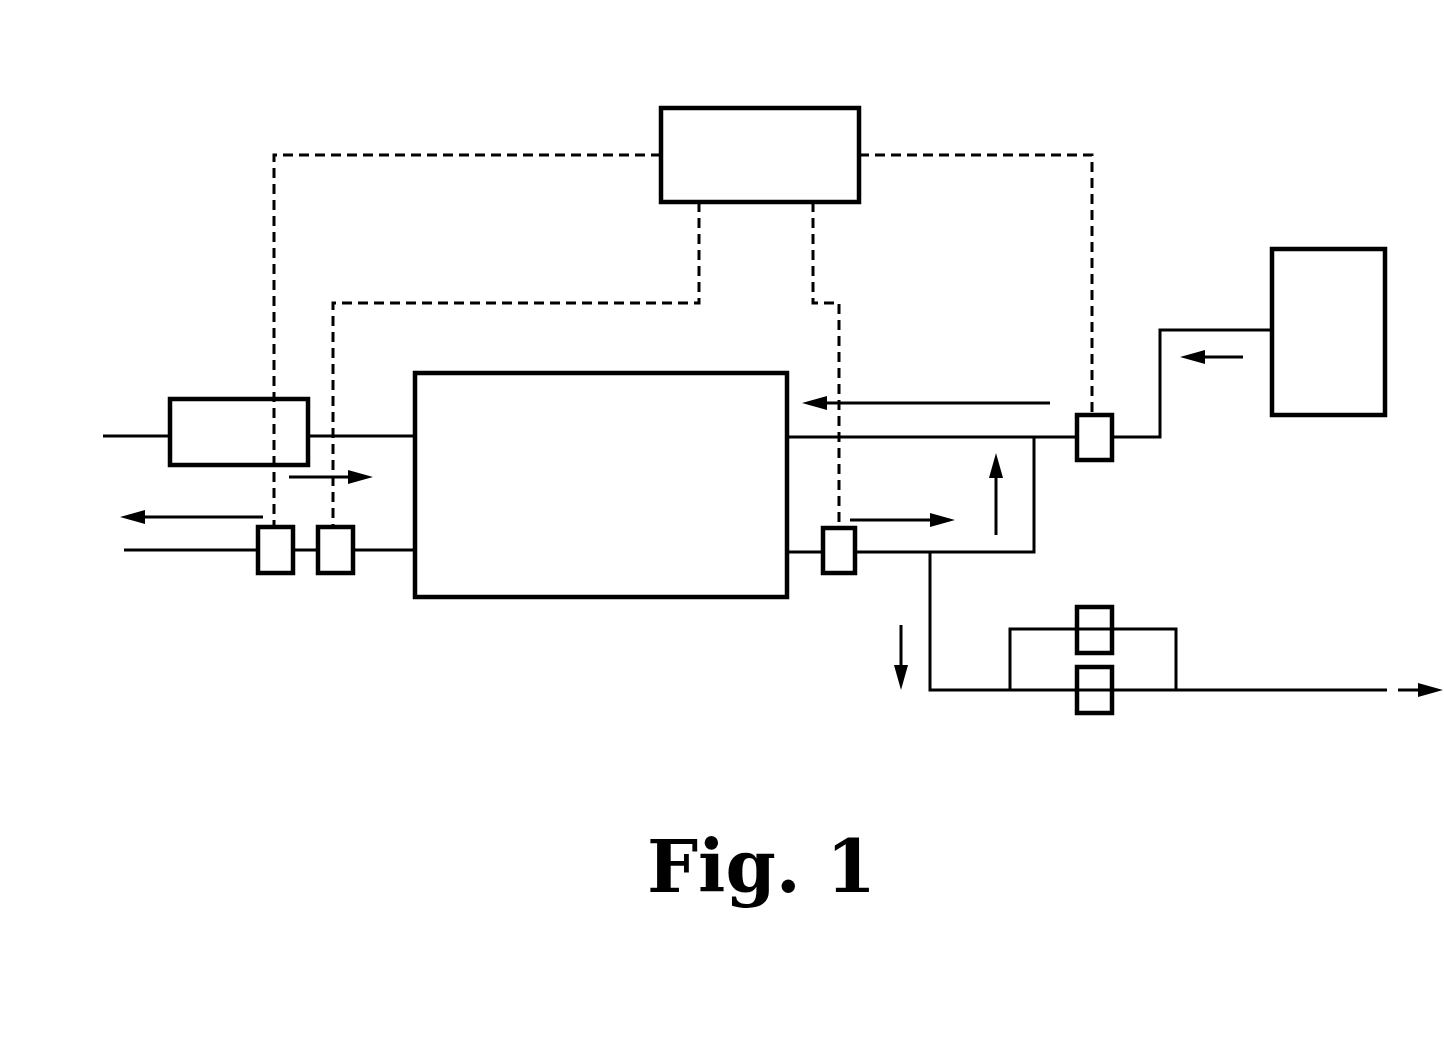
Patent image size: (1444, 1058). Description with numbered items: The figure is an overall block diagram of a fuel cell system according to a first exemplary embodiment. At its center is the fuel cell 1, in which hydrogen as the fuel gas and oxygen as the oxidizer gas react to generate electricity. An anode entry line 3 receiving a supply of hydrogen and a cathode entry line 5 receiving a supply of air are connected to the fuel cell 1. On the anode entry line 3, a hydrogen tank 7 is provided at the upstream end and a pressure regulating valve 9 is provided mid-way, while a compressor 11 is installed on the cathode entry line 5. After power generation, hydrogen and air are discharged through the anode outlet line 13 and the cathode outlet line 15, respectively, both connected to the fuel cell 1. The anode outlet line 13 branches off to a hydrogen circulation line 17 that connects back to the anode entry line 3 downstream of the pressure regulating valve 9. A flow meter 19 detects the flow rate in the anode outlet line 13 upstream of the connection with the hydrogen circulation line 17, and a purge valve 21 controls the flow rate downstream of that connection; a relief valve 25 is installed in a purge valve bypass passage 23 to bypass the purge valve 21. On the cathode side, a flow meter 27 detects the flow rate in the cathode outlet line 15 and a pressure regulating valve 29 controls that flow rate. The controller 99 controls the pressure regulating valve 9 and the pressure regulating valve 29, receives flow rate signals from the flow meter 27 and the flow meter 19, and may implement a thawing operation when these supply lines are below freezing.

The fuel cell 1 is at (583, 598).
The anode entry line 3 is at (860, 440).
The cathode entry line 5 is at (377, 433).
The hydrogen tank 7 is at (1338, 248).
The pressure regulating valve 9 is at (1093, 413).
The compressor 11 is at (200, 398).
The anode outlet line 13 is at (967, 692).
The cathode outlet line 15 is at (186, 552).
The hydrogen circulation line 17 is at (1034, 512).
The flow meter 19 is at (838, 575).
The purge valve 21 is at (1088, 715).
The purge valve bypass passage 23 is at (1178, 665).
The relief valve 25 is at (1113, 615).
The flow meter 27 is at (333, 575).
The pressure regulating valve 29 is at (273, 575).
The controller 99 is at (784, 180).